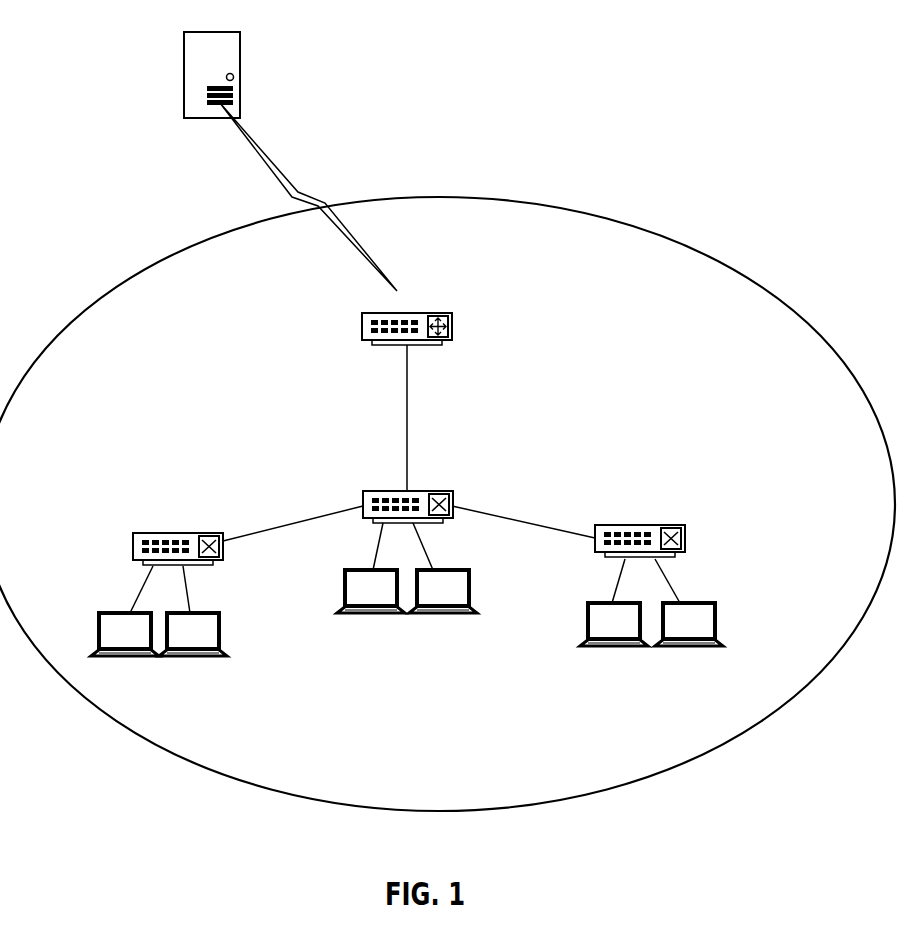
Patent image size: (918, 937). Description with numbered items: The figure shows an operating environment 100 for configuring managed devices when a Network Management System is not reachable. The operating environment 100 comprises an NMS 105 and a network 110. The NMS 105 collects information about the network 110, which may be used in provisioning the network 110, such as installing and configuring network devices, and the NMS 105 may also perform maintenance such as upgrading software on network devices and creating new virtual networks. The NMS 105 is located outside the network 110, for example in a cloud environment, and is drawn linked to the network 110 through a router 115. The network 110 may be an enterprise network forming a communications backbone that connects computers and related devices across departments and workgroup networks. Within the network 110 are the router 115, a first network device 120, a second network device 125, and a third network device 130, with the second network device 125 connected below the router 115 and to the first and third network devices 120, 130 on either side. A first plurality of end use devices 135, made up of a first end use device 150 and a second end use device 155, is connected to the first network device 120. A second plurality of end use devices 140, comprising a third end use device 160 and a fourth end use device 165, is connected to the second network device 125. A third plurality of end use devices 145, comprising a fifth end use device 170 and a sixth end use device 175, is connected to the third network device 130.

The operating environment 100 is at (780, 34).
The NMS 105 is at (184, 75).
The network 110 is at (763, 286).
The router 115 is at (362, 325).
The first network device 120 is at (201, 533).
The second network device 125 is at (455, 502).
The third network device 130 is at (687, 538).
The first plurality of end use devices 135 is at (245, 687).
The second plurality of end use devices 140 is at (447, 654).
The third plurality of end use devices 145 is at (633, 683).
The first end use device 150 is at (99, 630).
The second end use device 155 is at (221, 628).
The third end use device 160 is at (345, 586).
The fourth end use device 165 is at (470, 586).
The fifth end use device 170 is at (588, 618).
The sixth end use device 175 is at (716, 618).